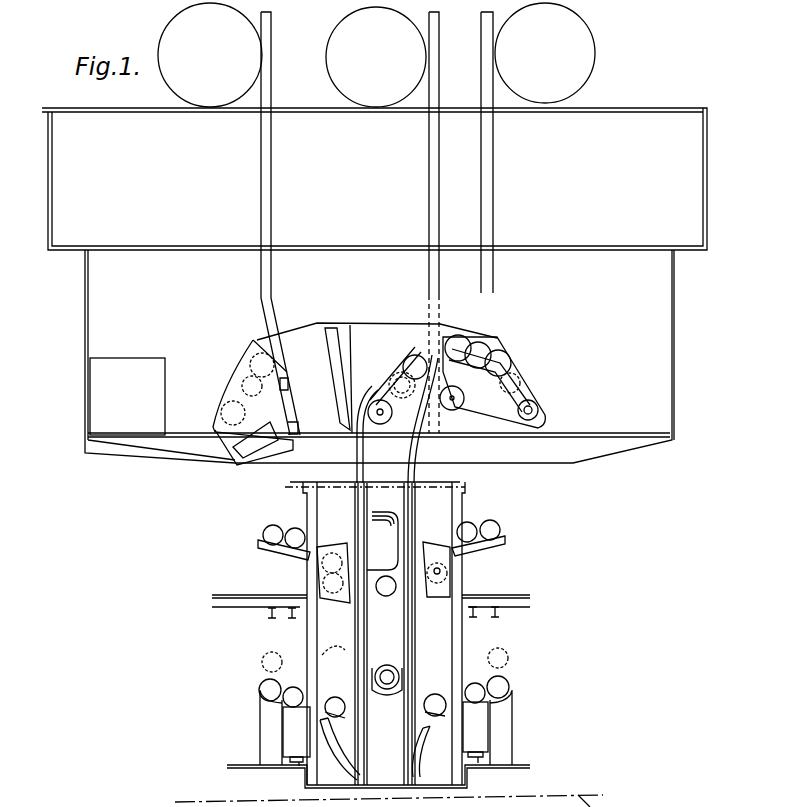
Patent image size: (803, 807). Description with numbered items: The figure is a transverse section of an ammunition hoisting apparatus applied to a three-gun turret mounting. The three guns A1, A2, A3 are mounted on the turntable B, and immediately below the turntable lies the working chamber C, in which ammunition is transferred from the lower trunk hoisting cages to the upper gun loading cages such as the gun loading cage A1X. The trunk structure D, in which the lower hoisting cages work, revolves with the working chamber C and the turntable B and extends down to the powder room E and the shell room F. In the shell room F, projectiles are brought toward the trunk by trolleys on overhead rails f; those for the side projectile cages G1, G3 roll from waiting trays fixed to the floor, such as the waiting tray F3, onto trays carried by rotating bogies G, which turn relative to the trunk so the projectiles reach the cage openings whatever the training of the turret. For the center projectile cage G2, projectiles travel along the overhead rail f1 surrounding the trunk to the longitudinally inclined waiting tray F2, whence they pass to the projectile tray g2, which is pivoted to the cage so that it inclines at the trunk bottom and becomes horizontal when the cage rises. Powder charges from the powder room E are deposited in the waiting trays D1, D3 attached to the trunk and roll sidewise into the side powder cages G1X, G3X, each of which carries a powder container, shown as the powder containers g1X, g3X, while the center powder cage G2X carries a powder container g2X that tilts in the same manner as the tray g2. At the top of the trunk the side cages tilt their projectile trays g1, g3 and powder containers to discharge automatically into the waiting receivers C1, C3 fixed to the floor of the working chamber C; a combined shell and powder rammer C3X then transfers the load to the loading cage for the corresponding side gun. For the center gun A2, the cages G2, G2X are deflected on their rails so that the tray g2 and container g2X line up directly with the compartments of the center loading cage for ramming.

The gun A1 is at (210, 55).
The gun A2 is at (376, 57).
The gun A3 is at (545, 53).
The turntable B is at (374, 179).
The working chamber C is at (379, 356).
The ammunition receptacle or waiting receiver C1 is at (256, 356).
The gun loading cage A1X is at (236, 392).
The combined shell and powder rammer C3X is at (522, 398).
The ammunition receptacle or waiting receiver C3 is at (532, 417).
The side powder cage G3X is at (507, 352).
The side projectile cage G3 is at (462, 413).
The center powder cage G2X is at (410, 367).
The center projectile cage G2 is at (380, 424).
The trunk structure D is at (375, 633).
The powder tray or powder container g2X is at (383, 537).
The powder room E is at (390, 523).
The waiting tray D1 is at (310, 550).
The waiting tray D3 is at (457, 550).
The side powder cage G1X is at (350, 598).
The left block roller g1X is at (322, 567).
The right roller block g3X is at (413, 607).
The overhead rail f is at (497, 615).
The overhead rail f1 is at (474, 618).
The shell room F is at (374, 651).
The inclined waiting tray F2 is at (280, 708).
The waiting tray F3 is at (486, 710).
The rotating bogie G is at (385, 734).
The side projectile cage G1 is at (322, 720).
The projectile tray g1 is at (334, 718).
The projectile tray g2 is at (388, 690).
The projectile tray g3 is at (426, 738).